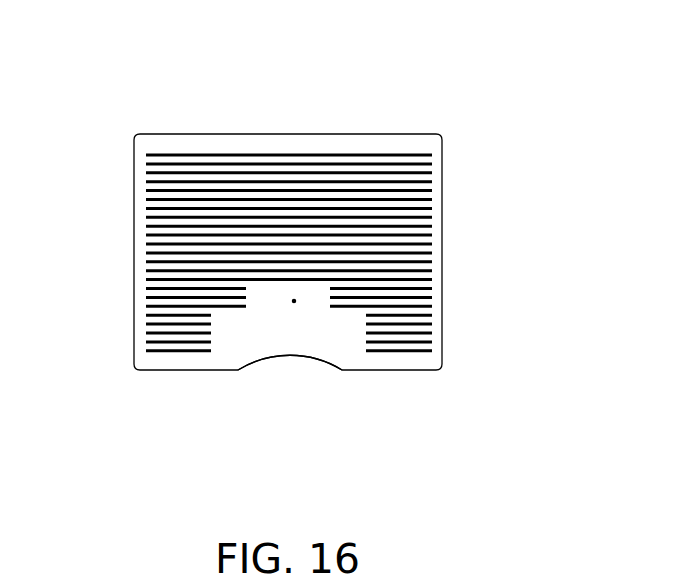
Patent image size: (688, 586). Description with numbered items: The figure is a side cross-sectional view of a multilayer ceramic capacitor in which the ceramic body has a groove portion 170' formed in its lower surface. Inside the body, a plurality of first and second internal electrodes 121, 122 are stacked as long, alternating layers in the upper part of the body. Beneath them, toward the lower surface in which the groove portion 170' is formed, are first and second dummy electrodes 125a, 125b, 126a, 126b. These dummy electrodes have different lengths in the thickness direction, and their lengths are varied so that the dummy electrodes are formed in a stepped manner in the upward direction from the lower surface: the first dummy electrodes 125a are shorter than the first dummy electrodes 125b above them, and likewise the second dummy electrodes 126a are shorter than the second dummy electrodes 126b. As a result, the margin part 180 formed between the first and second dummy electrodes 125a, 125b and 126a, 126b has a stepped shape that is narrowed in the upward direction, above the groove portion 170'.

The first internal electrode 121 is at (205, 155).
The second internal electrode 122 is at (292, 160).
The first dummy electrode 125a is at (177, 352).
The first dummy electrode 125b is at (152, 306).
The second dummy electrode 126a is at (403, 352).
The second dummy electrode 126b is at (405, 288).
The groove portion 170' is at (274, 425).
The margin part 180 is at (294, 301).